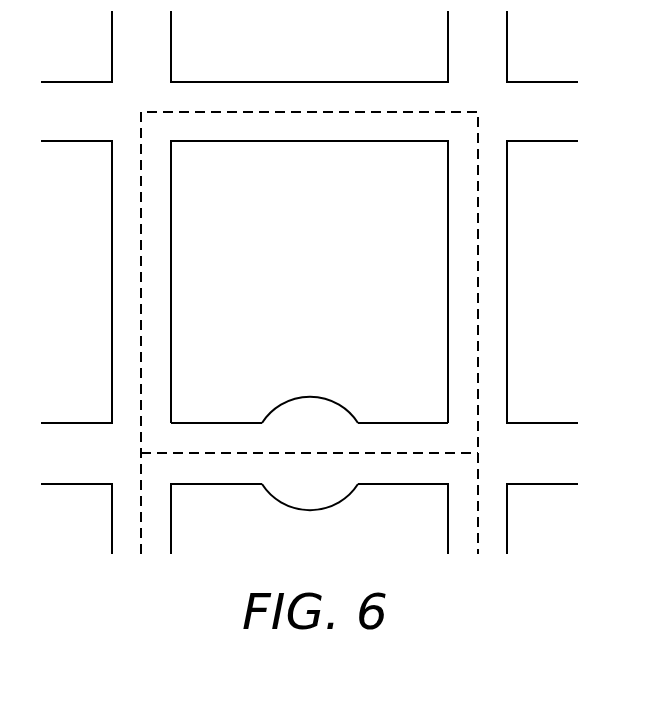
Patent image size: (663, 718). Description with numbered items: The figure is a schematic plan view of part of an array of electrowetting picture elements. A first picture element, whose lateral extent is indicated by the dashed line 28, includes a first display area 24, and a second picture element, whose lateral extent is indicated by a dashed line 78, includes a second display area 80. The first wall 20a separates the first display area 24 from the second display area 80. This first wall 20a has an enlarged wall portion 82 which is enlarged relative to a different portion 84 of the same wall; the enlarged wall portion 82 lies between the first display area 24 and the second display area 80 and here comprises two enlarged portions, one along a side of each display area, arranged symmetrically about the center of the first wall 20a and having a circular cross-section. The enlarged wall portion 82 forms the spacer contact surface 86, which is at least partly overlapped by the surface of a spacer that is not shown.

The dashed line 28 is at (306, 110).
The first display area 24 is at (309, 286).
The enlarged wall portion 82 is at (308, 408).
The different portion of the first wall 84 is at (215, 430).
The first wall 20a is at (400, 421).
The spacer contact surface 86 is at (308, 493).
The second display area 80 is at (309, 522).
The dashed line 78 is at (475, 528).